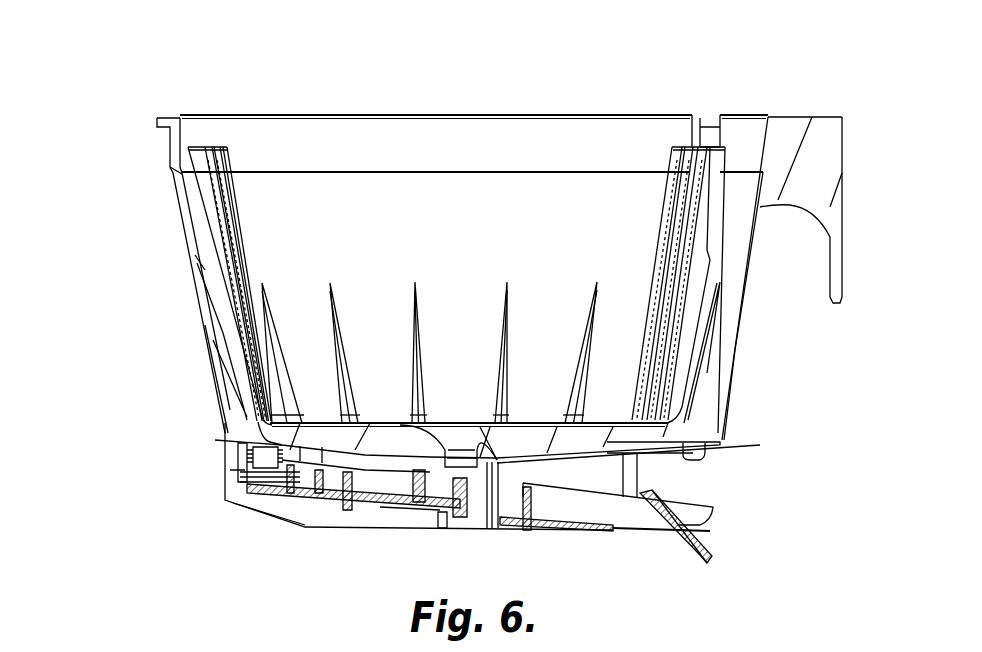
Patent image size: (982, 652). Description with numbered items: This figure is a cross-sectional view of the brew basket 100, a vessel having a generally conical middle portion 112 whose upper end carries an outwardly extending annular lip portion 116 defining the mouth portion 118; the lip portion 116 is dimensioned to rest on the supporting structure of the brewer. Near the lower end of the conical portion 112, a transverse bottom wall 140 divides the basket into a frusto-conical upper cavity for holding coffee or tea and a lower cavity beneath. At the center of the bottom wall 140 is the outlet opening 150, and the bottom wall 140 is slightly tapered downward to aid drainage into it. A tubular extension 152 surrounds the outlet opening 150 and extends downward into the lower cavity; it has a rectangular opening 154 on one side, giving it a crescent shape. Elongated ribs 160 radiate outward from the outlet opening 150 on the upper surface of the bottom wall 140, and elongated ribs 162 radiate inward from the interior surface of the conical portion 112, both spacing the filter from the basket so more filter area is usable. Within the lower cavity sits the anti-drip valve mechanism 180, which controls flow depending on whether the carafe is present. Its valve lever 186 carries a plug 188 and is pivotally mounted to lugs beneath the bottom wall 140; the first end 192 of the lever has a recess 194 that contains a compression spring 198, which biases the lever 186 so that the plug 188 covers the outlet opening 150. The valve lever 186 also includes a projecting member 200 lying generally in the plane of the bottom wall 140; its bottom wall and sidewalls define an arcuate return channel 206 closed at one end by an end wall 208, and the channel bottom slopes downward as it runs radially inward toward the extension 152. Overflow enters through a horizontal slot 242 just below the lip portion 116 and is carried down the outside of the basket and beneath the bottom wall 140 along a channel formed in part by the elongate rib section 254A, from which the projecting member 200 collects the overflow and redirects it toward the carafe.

The brew basket 100 is at (165, 85).
The annular lip portion 116 is at (157, 122).
The mouth portion 118 is at (442, 142).
The horizontal slot 242 is at (710, 131).
The conical middle portion 112 is at (745, 305).
The elongated ribs 162 is at (277, 348).
The elongated ribs 160 is at (443, 423).
The bottom wall 140 is at (255, 432).
The compression spring 198 is at (250, 455).
The anti-drip valve mechanism 180 is at (220, 505).
The recess 194 is at (293, 495).
The first end 192 is at (318, 497).
The opening 154 is at (435, 487).
The plug 188 is at (440, 517).
The outlet opening 150 is at (467, 460).
The tubular extension 152 is at (495, 498).
The valve lever 186 is at (606, 528).
The elongate rib section 254A is at (693, 453).
The return channel 206 is at (525, 498).
The end wall 208 is at (713, 505).
The projecting member 200 is at (700, 523).